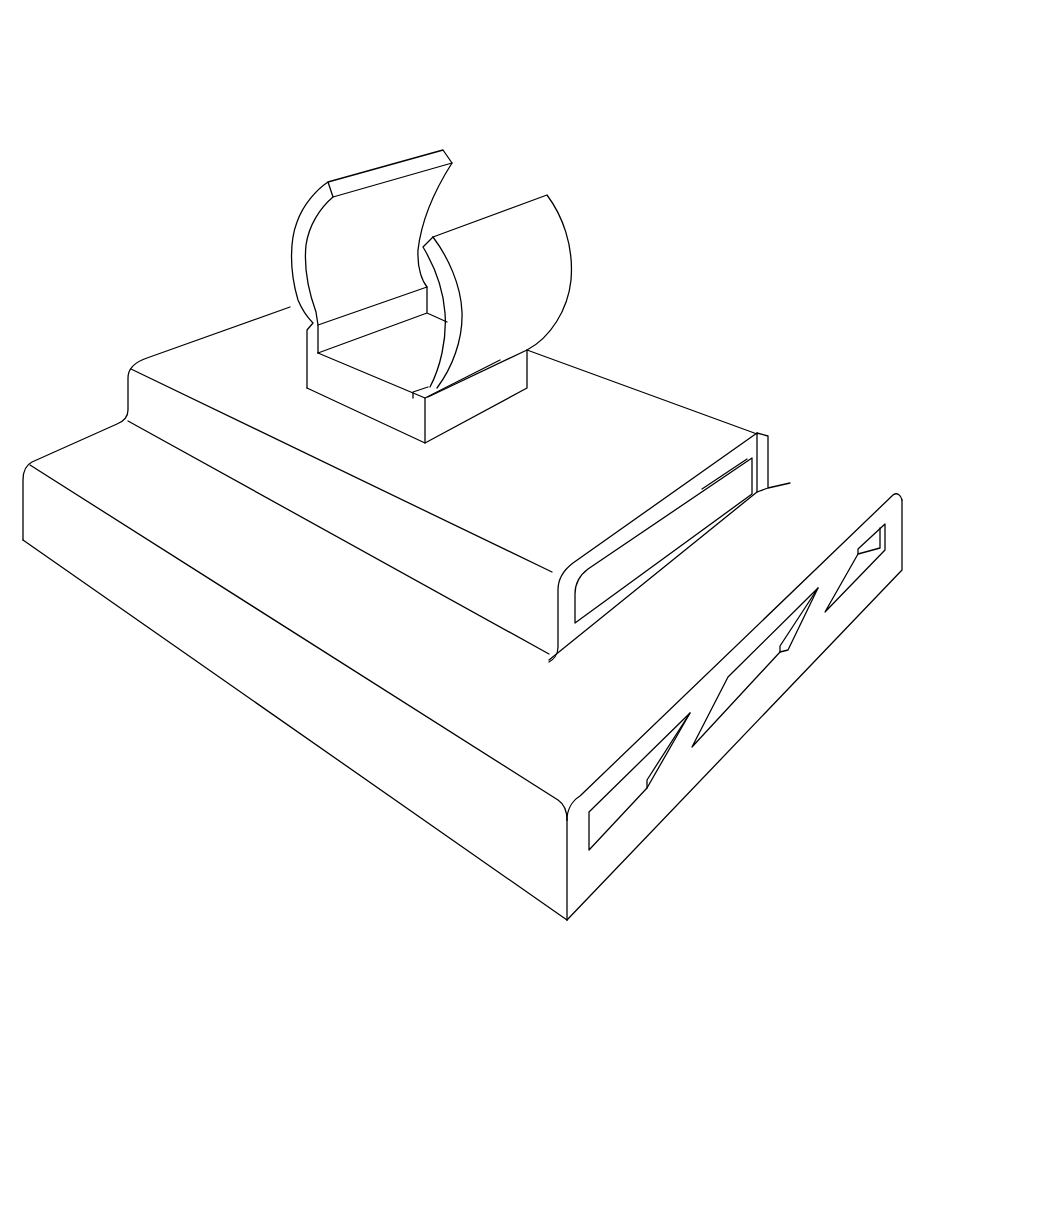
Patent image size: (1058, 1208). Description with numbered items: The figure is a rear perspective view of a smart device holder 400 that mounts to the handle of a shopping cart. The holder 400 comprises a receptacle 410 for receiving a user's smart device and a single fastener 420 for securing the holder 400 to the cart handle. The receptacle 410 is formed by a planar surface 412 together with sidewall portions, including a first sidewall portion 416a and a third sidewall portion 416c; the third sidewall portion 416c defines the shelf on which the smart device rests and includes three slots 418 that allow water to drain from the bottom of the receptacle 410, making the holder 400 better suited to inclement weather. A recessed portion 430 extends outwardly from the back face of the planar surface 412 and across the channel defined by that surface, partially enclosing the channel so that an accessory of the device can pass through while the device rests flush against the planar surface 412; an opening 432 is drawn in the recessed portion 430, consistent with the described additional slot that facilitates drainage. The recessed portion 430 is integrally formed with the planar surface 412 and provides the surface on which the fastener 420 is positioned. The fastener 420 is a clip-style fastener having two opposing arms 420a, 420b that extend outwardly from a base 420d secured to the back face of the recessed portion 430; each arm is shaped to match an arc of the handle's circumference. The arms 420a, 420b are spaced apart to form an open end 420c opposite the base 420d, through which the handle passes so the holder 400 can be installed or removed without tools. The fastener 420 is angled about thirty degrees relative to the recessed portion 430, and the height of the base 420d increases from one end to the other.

The smart device holder 400 is at (163, 112).
The receptacle 410 is at (75, 440).
The planar surface 412 is at (867, 495).
The first sidewall portion 416a is at (332, 728).
The third sidewall portion 416c is at (690, 770).
The slot 418 is at (860, 560).
The fastener 420 is at (565, 232).
The arm 420a is at (313, 203).
The arm 420b is at (550, 313).
The open end 420c is at (487, 178).
The base 420d is at (530, 371).
The recessed portion 430 is at (778, 487).
The slot 432 is at (735, 477).